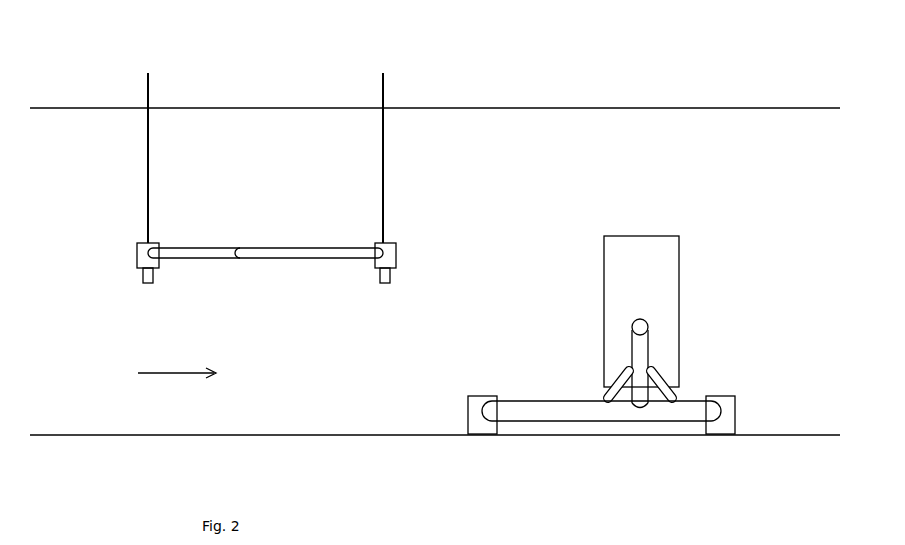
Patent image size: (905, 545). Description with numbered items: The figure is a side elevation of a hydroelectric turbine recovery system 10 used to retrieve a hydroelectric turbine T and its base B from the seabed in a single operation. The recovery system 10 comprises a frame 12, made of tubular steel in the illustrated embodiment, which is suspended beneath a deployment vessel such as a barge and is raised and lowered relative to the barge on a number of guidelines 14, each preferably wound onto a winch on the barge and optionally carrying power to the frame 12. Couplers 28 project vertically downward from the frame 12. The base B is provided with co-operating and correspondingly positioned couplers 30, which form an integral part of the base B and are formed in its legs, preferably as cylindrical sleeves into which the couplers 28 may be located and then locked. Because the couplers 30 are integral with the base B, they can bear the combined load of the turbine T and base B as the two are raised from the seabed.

The hydroelectric turbine recovery system 10 is at (471, 78).
The frame 12 is at (249, 262).
The guidelines 14 is at (147, 158).
The couplers 28 is at (134, 255).
The couplers 30 is at (474, 402).
The hydroelectric turbine T is at (671, 243).
The base B is at (690, 412).